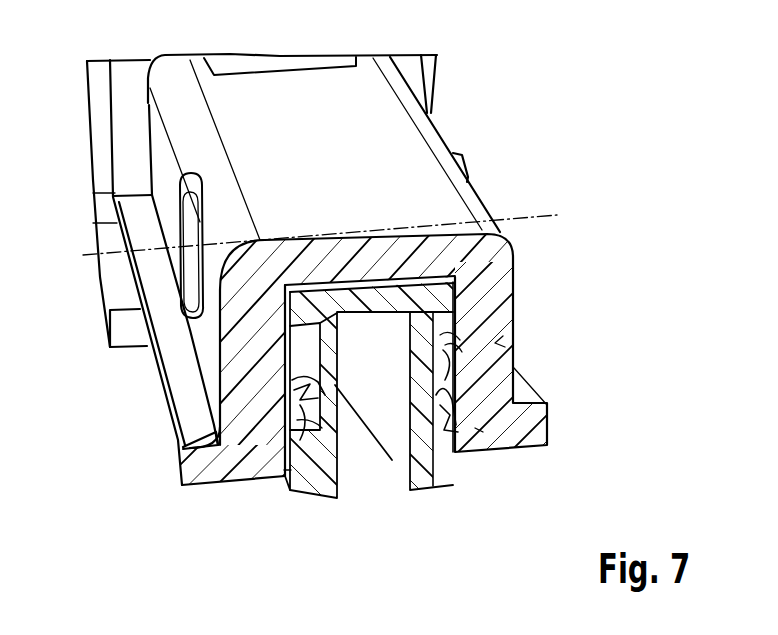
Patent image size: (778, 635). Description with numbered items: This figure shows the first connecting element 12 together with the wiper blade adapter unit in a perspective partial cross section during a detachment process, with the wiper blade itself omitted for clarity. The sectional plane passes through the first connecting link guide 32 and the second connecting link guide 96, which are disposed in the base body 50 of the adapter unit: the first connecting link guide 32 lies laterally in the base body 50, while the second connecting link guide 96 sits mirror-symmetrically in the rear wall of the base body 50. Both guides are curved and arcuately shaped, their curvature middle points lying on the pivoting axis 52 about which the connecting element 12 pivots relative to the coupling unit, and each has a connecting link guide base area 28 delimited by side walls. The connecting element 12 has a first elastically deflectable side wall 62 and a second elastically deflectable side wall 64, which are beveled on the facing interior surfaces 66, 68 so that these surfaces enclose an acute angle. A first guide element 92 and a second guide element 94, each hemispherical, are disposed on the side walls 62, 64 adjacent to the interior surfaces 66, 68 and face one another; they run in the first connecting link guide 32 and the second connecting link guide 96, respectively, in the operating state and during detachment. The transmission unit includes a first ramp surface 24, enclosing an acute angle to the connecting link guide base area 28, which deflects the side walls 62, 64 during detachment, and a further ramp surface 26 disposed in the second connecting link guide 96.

The first connecting element 12 is at (508, 98).
The first ramp surface 24 is at (312, 483).
The further ramp surface 26 is at (457, 447).
The connecting link guide base area 28 is at (300, 383).
The first connecting link guide 32 is at (337, 427).
The base body 50 is at (372, 297).
The pivoting axis 52 is at (83, 255).
The first elastically deflectable side wall 62 is at (178, 463).
The second elastically deflectable side wall 64 is at (495, 343).
The interior surface 66 is at (305, 400).
The interior surface 68 is at (443, 342).
The first guide element 92 is at (285, 473).
The second guide element 94 is at (480, 430).
The second connecting link guide 96 is at (475, 375).